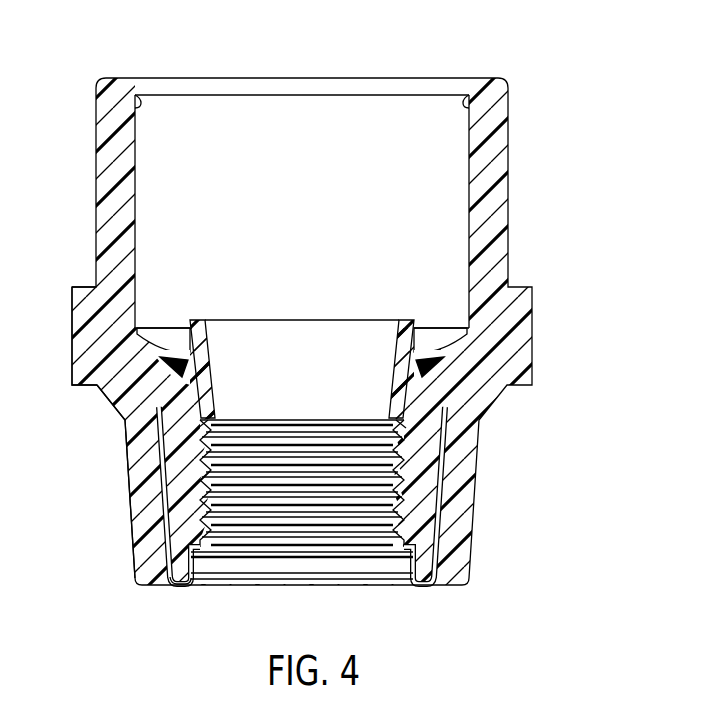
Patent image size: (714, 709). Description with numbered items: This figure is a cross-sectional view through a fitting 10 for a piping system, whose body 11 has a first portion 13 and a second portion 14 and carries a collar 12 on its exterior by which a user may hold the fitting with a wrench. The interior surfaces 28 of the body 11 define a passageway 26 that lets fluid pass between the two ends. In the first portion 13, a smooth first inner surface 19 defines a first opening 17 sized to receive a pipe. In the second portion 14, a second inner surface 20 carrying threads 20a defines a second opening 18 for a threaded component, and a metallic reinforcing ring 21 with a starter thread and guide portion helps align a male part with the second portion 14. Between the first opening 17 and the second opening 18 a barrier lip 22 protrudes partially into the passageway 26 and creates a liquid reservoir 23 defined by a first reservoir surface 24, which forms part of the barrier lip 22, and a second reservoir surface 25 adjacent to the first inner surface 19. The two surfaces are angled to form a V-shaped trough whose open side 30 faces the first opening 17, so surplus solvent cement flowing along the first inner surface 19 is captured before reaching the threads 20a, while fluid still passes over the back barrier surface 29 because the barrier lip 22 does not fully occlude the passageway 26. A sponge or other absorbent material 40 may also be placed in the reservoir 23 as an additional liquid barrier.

The fitting 10 is at (565, 68).
The body 11 is at (512, 258).
The collar 12 is at (532, 381).
The first portion 13 is at (96, 195).
The second portion 14 is at (128, 514).
The first opening 17 is at (328, 86).
The second opening 18 is at (280, 592).
The first inner surface 19 is at (136, 181).
The second inner surface 20 is at (213, 500).
The threads 20a is at (197, 473).
The metallic reinforcing ring 21 is at (405, 575).
The barrier lip 22 is at (200, 322).
The liquid reservoir 23 is at (117, 403).
The first reservoir surface 24 is at (180, 332).
The second reservoir surface 25 is at (152, 346).
The passageway 26 is at (368, 166).
The interior surfaces 28 is at (138, 105).
The back barrier surface 29 is at (198, 428).
The open side 30 is at (440, 316).
The absorbent material 40 is at (185, 360).